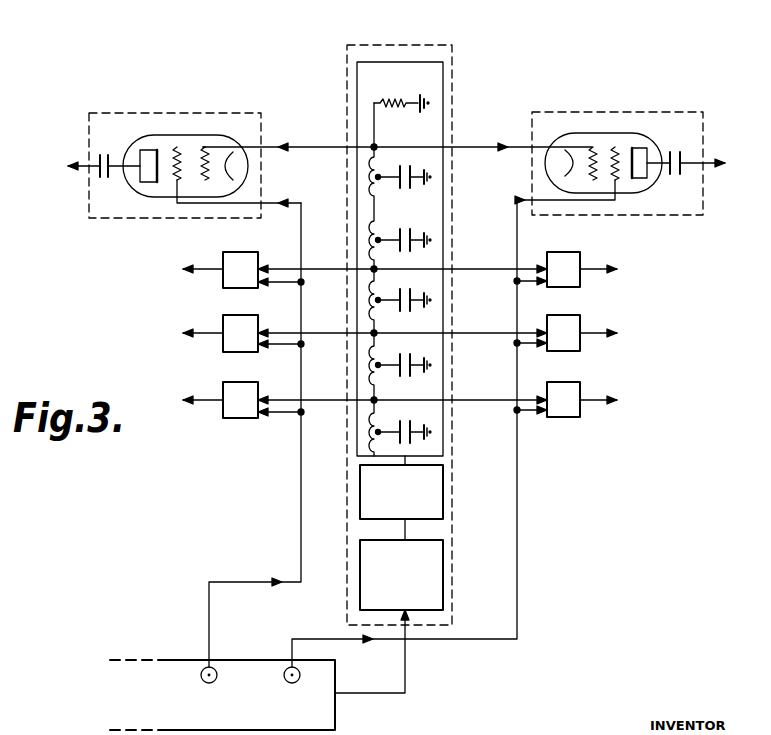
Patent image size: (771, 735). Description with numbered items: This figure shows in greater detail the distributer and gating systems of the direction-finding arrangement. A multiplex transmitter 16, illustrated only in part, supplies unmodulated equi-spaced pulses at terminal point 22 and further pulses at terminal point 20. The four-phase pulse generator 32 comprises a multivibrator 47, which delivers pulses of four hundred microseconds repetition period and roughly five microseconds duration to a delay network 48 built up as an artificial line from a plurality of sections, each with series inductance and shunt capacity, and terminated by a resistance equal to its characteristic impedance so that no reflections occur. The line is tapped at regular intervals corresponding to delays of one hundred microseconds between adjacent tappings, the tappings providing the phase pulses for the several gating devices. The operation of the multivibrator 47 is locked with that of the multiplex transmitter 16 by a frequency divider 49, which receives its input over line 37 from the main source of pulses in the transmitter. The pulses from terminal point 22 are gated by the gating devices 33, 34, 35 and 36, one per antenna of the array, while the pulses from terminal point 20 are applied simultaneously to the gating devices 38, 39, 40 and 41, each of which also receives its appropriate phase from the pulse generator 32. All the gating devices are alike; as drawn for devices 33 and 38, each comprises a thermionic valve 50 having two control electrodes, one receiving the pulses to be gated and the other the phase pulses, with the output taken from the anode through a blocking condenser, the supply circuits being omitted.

The multiplex transmitter 16 is at (328, 710).
The terminal point 20 is at (206, 683).
The terminal point 22 is at (289, 683).
The four-phase pulse generator 32 is at (356, 52).
The gating device 33 is at (640, 113).
The gating device 34 is at (577, 254).
The gating device 35 is at (577, 317).
The gating device 36 is at (577, 384).
The line 37 is at (407, 665).
The gating device 38 is at (378, 156).
The gating device 39 is at (254, 254).
The gating device 40 is at (254, 317).
The gating device 41 is at (254, 384).
The multivibrator 47 is at (443, 492).
The delay network 48 is at (432, 75).
The frequency divider 49 is at (443, 573).
The thermionic valve 50 is at (222, 140).